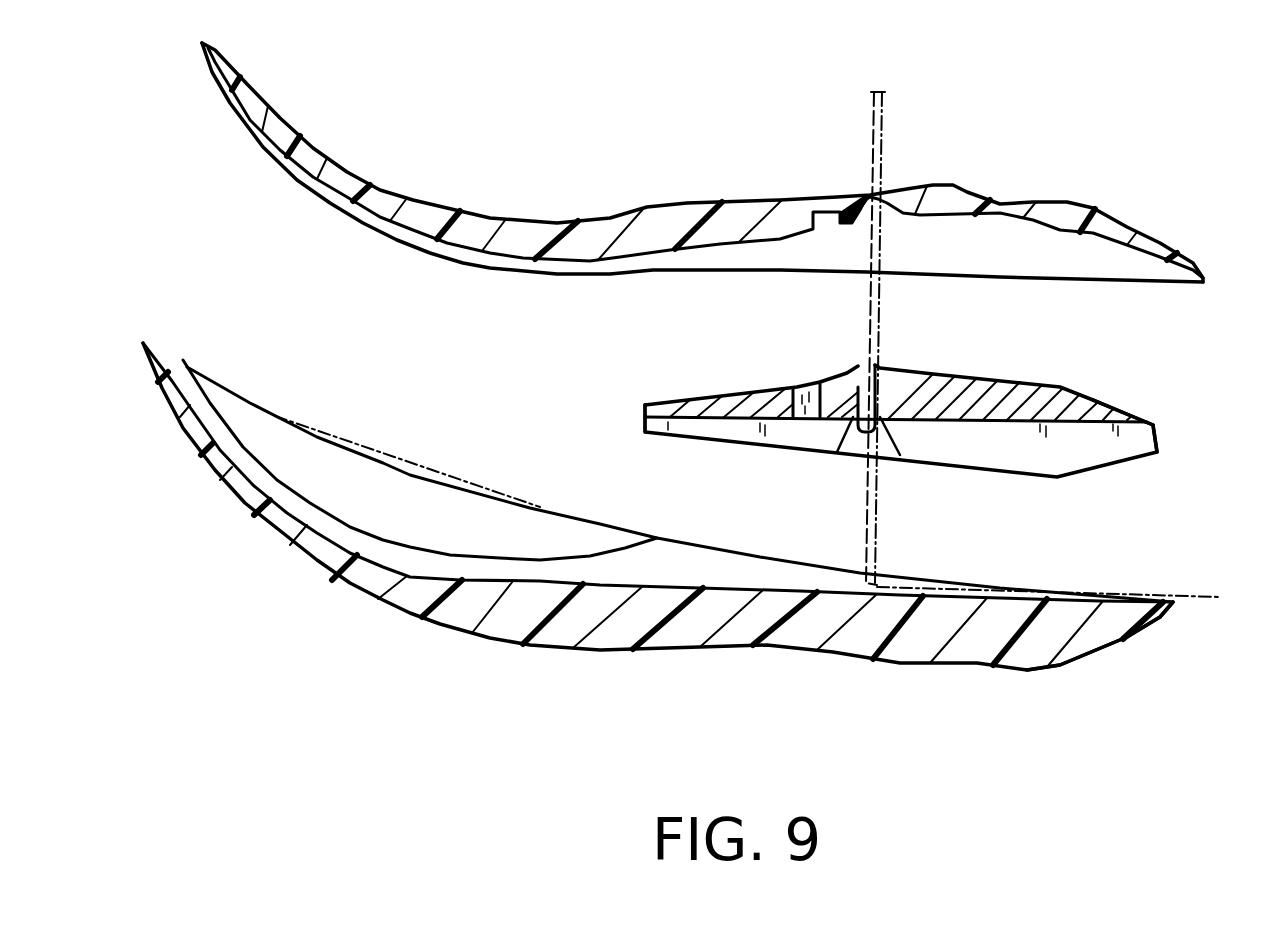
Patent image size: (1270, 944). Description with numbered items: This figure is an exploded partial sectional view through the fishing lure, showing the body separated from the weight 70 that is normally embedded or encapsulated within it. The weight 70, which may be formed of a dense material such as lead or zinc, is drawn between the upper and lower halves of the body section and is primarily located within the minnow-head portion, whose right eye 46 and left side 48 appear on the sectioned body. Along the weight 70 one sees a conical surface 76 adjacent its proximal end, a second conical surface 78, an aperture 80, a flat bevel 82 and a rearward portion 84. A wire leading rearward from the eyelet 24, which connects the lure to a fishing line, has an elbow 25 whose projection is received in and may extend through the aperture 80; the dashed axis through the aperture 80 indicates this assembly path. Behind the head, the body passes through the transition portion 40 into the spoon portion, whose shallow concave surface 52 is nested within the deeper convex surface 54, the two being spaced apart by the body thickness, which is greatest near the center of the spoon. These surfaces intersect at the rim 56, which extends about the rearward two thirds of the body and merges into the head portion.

The eyelet 24 is at (706, 531).
The elbow 25 is at (873, 583).
The transition portion 40 is at (702, 553).
The right eye 46 is at (1100, 210).
The left side 48 is at (1053, 663).
The concave surface 52 is at (378, 511).
The convex surface 54 is at (513, 640).
The rim 56 is at (447, 488).
The weight 70 is at (902, 421).
The conical surface 76 is at (1093, 400).
The second conical surface 78 is at (950, 376).
The aperture 80 is at (866, 362).
The flat bevel 82 is at (767, 388).
The rearward portion 84 is at (655, 403).